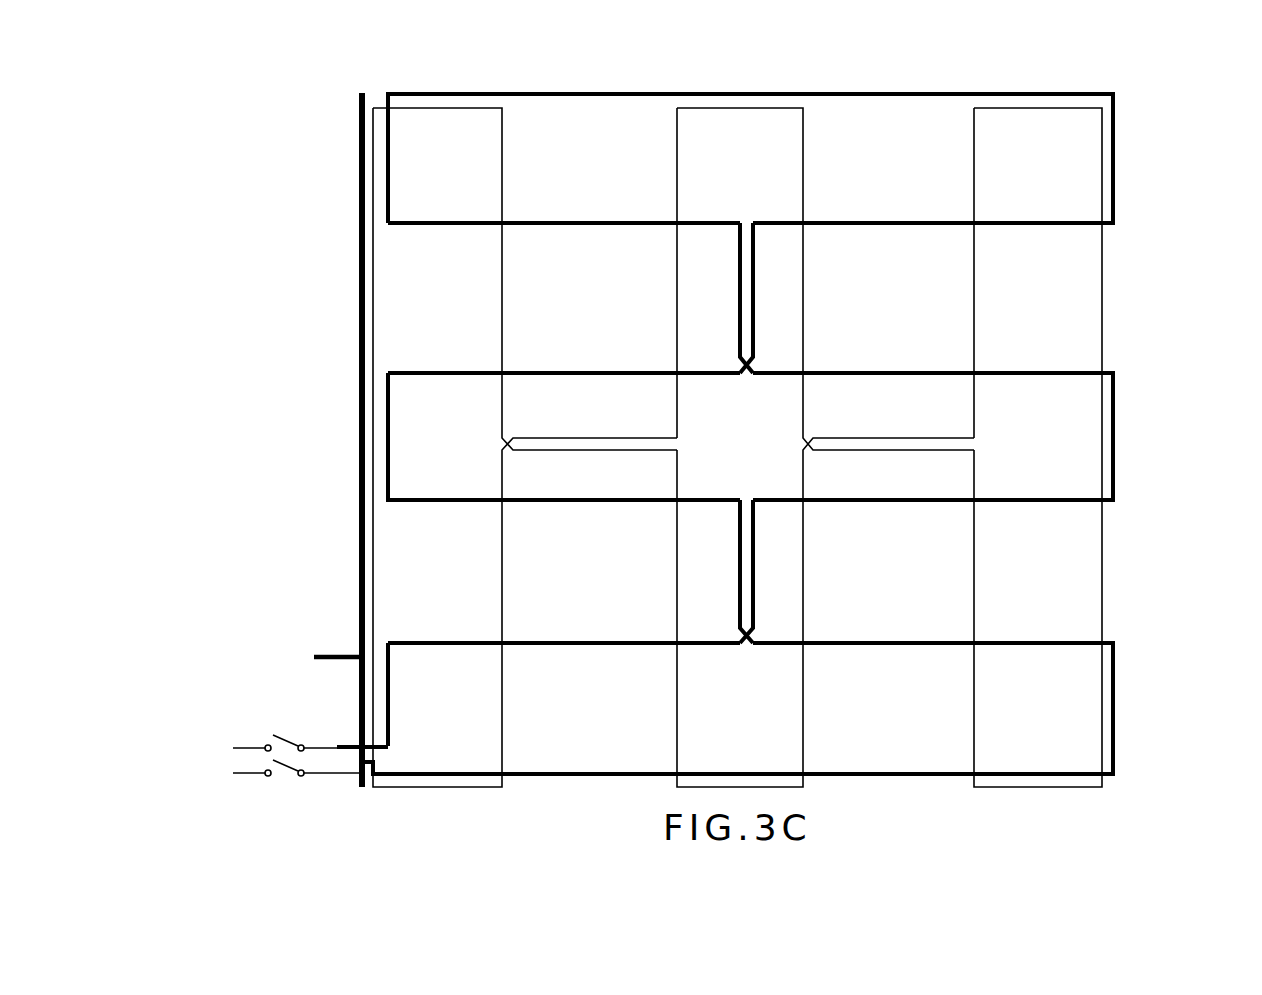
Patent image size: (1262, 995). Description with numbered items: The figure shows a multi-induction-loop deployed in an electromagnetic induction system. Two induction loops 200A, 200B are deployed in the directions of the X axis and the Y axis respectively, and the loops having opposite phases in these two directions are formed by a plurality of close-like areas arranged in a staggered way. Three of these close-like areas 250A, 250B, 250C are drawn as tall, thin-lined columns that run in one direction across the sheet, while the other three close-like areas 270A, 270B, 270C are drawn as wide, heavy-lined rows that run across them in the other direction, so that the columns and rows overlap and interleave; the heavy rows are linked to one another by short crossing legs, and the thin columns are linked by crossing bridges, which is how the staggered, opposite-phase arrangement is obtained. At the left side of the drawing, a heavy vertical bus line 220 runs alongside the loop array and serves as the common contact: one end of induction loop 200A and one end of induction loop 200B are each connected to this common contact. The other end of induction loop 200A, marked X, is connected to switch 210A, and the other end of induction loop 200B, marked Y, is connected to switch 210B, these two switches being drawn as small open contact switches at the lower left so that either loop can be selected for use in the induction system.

The close-like area 250A is at (440, 148).
The close-like area 250B is at (722, 148).
The close-like area 250C is at (1034, 148).
The close-like area 270A is at (1108, 725).
The close-like area 270B is at (1108, 440).
The close-like area 270C is at (1108, 198).
The common bus line 220 is at (348, 655).
The induction loop 200A is at (328, 773).
The induction loop 200B is at (337, 748).
The switch 210A is at (245, 773).
The switch 210B is at (235, 747).